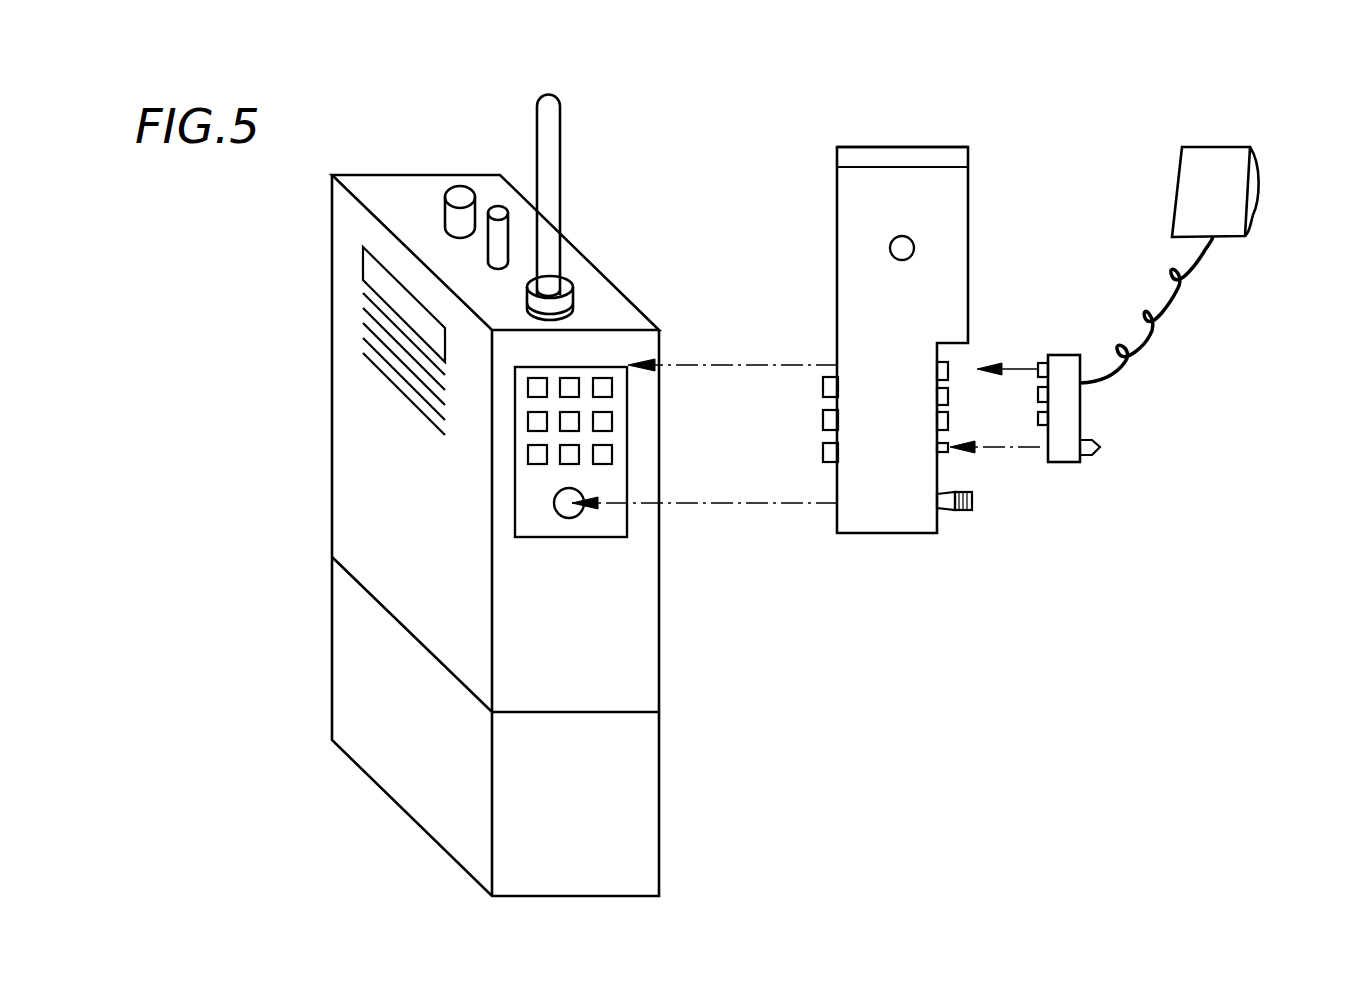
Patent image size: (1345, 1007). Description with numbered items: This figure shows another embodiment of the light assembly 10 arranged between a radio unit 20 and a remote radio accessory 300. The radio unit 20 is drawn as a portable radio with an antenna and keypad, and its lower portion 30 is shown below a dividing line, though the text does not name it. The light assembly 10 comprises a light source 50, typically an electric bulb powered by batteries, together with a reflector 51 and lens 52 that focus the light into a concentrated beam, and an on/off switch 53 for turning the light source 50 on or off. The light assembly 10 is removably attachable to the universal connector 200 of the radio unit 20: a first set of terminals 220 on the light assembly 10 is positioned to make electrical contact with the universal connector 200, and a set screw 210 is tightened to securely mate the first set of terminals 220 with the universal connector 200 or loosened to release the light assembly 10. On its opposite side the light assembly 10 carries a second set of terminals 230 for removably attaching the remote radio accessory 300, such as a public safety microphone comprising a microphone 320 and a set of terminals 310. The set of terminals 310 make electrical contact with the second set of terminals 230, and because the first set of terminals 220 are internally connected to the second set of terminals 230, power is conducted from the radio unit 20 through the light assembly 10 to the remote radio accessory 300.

The light assembly 10 is at (1052, 242).
The radio unit 20 is at (347, 240).
The battery pack 30 is at (642, 785).
The light source 50 is at (888, 301).
The reflector 51 is at (847, 147).
The lens 52 is at (903, 141).
The on/off switch 53 is at (897, 248).
The universal connector 200 is at (613, 490).
The set screw 210 is at (973, 498).
The first set of terminals 220 is at (820, 372).
The second set of terminals 230 is at (955, 358).
The remote radio accessory 300 is at (1303, 148).
The set of terminals 310 is at (1082, 413).
The microphone 320 is at (1213, 158).